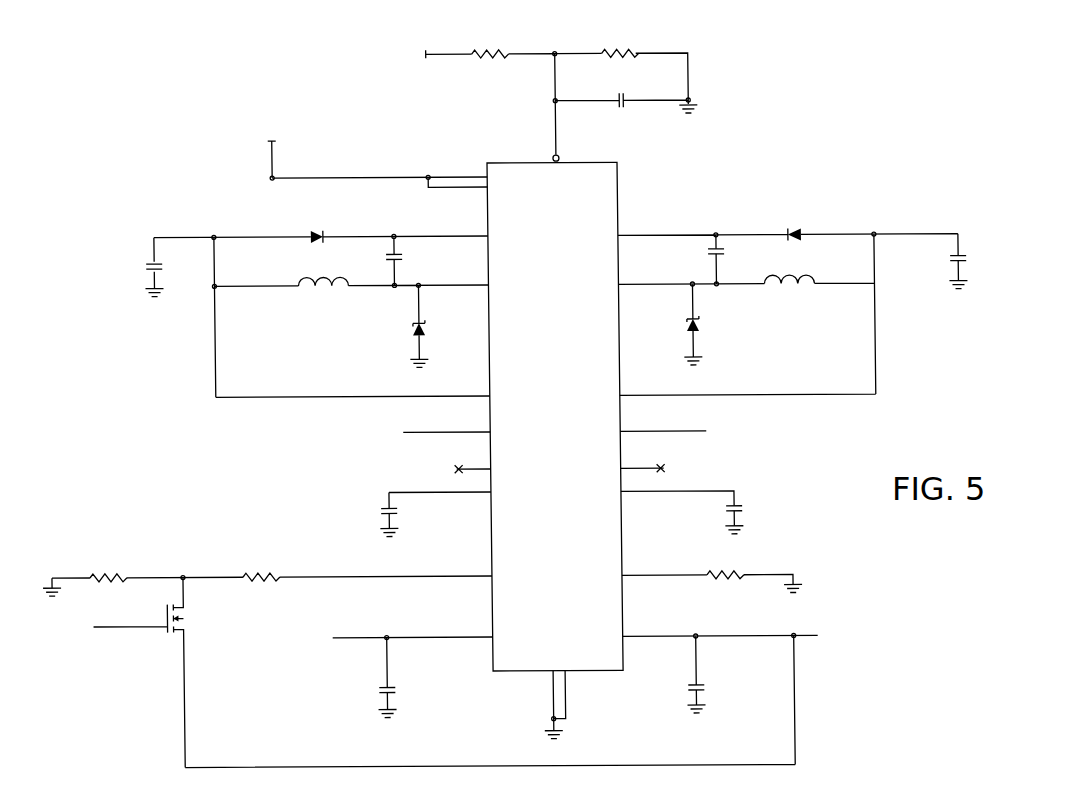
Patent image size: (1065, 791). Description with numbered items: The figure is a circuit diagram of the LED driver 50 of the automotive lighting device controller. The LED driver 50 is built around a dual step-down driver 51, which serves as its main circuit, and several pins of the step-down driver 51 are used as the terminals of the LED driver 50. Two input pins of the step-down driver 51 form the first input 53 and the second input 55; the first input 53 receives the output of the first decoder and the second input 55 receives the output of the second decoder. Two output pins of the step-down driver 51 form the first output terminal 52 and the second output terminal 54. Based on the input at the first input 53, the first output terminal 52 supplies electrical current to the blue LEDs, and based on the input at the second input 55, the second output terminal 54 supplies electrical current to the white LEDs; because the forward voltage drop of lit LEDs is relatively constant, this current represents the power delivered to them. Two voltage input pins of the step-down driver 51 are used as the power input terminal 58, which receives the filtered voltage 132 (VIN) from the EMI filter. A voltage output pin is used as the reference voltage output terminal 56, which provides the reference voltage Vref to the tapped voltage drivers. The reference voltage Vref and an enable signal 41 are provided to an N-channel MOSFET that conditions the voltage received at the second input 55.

The LED driver 50 is at (807, 142).
The dual step-down driver 51 is at (610, 190).
The first output terminal 52 is at (442, 419).
The first input 53 is at (393, 671).
The second output terminal 54 is at (676, 419).
The second input 55 is at (737, 667).
The reference voltage output terminal 56 is at (268, 573).
The power input terminal 58 is at (380, 166).
The filtered voltage 132 is at (249, 152).
The enable signal 41 is at (146, 672).